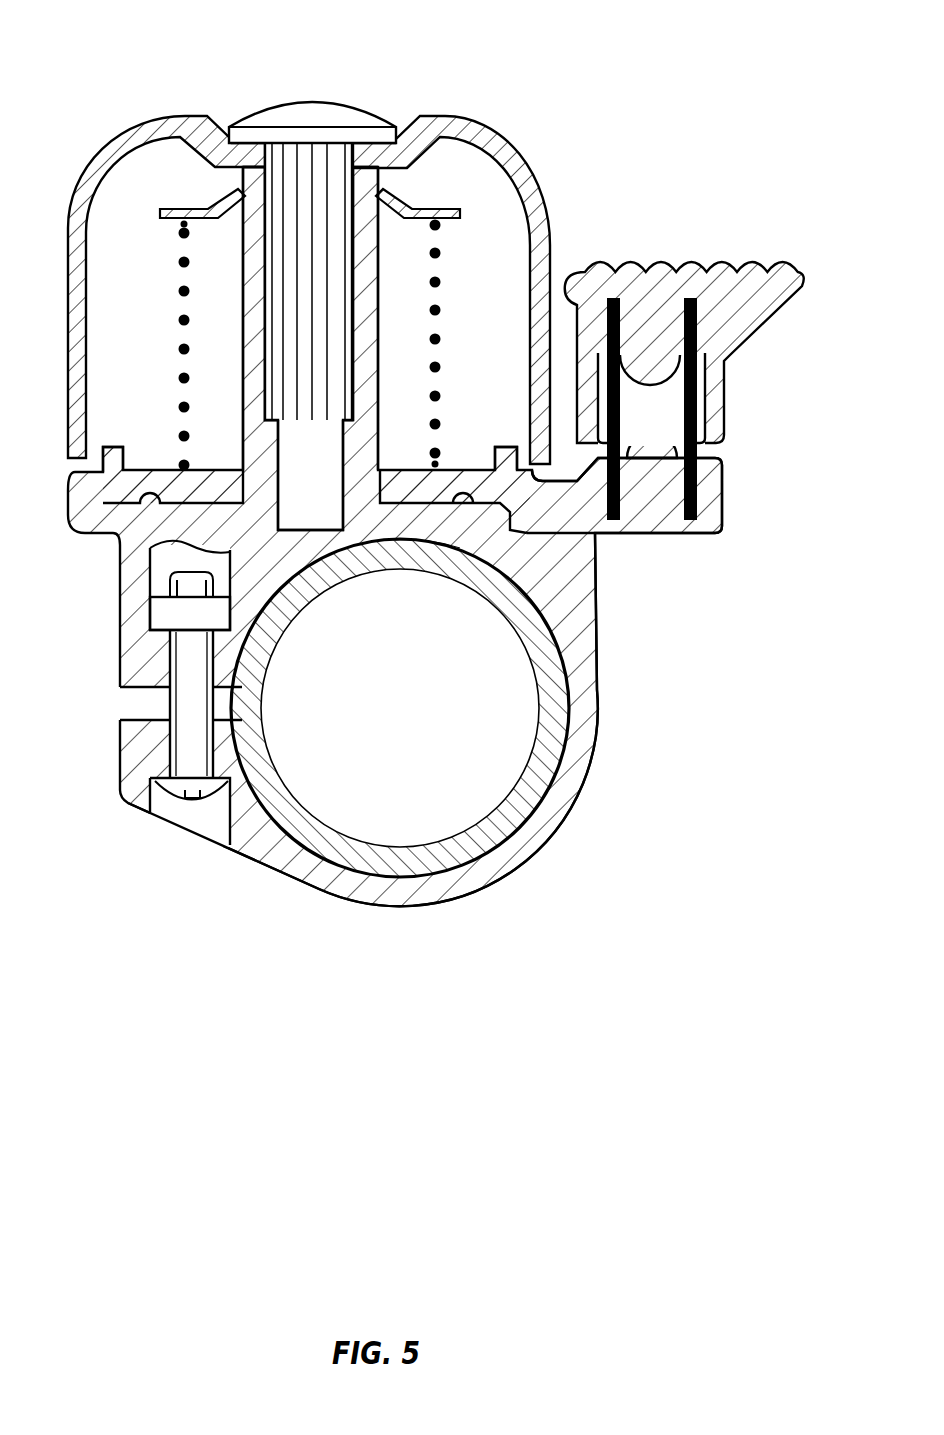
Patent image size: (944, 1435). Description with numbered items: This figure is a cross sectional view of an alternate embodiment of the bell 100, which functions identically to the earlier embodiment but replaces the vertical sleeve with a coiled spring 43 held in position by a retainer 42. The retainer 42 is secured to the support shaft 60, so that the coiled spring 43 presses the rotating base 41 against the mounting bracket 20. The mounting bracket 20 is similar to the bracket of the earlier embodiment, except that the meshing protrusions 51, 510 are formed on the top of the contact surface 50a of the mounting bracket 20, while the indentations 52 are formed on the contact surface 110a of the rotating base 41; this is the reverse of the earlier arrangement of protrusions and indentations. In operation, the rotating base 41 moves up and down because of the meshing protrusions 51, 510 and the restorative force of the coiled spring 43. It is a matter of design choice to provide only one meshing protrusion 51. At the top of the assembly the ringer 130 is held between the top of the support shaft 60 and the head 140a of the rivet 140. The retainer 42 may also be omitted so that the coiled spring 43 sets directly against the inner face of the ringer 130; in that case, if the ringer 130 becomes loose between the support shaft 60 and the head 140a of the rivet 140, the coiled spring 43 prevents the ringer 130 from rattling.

The bell 100 is at (413, 453).
The ringer 130 is at (541, 183).
The rivet 140 is at (242, 265).
The head 140a is at (262, 110).
The retainer 42 is at (198, 206).
The coiled spring 43 is at (178, 263).
The support shaft 60 is at (242, 340).
The meshing protrusion 51 is at (151, 492).
The meshing protrusion 510 is at (465, 473).
The indentations 52 is at (150, 496).
The contact surface 50a is at (427, 541).
The contact surface 110a is at (413, 500).
The rotating base 41 is at (587, 547).
The mounting bracket 20 is at (589, 812).